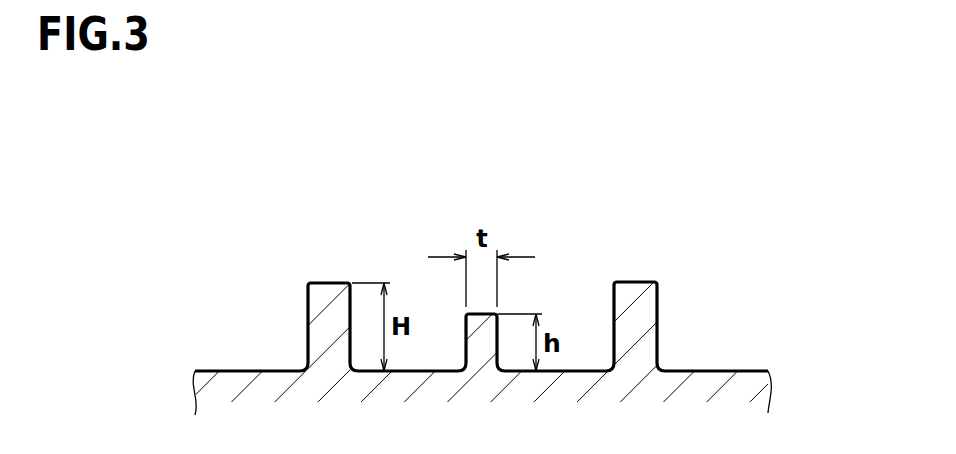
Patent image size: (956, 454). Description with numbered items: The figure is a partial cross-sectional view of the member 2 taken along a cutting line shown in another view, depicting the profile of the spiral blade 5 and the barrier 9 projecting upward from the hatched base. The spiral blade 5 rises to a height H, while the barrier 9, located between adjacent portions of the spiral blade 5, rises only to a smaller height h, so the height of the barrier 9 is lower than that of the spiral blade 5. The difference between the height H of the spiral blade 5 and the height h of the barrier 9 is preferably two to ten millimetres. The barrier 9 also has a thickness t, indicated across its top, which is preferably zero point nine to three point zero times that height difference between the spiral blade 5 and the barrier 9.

The substrate / base member 2 is at (746, 250).
The spiral blade 5 is at (327, 292).
The barrier 9 is at (480, 343).